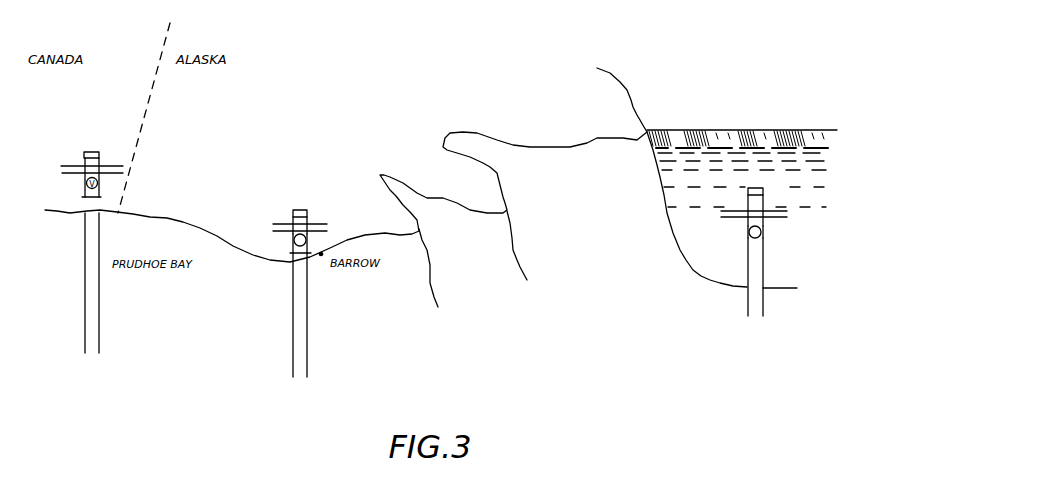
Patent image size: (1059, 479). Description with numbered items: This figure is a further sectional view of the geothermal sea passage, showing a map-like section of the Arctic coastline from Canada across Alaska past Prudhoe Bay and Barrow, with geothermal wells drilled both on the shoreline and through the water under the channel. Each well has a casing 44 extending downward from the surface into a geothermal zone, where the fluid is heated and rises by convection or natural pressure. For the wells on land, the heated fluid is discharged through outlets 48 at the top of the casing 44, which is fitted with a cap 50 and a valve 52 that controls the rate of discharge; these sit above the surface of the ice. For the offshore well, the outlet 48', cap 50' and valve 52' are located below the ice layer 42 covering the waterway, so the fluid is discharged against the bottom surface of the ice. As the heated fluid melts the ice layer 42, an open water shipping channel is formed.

The ice layer 42 is at (777, 128).
The casing 44 is at (310, 333).
The outlets 48 is at (314, 218).
The outlet 48' is at (768, 224).
The cap 50 is at (317, 209).
The cap 50' is at (774, 197).
The valve 52 is at (278, 241).
The valve 52' is at (735, 237).